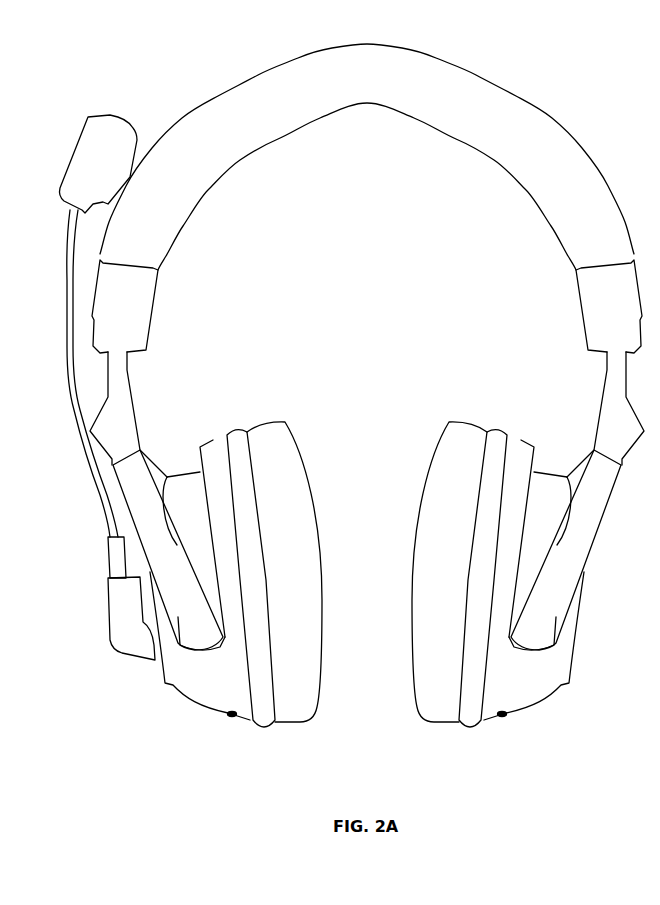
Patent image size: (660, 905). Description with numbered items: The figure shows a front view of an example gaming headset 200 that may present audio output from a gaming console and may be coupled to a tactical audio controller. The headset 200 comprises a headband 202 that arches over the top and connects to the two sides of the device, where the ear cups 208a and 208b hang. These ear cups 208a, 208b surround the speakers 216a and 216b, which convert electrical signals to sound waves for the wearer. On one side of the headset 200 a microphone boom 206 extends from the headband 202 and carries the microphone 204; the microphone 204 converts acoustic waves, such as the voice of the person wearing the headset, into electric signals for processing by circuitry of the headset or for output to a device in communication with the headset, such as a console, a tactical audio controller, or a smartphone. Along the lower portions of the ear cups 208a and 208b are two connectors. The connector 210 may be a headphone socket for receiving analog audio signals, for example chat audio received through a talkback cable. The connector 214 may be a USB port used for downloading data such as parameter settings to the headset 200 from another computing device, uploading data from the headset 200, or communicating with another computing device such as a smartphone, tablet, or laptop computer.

The headset 200 is at (160, 74).
The headband 202 is at (511, 81).
The microphone 204 is at (73, 158).
The microphone boom 206 is at (68, 347).
The ear cup 208a is at (296, 413).
The ear cup 208b is at (462, 424).
The connector 210 is at (230, 716).
The connector 214 is at (503, 716).
The speaker 216a is at (325, 543).
The speaker 216b is at (410, 512).